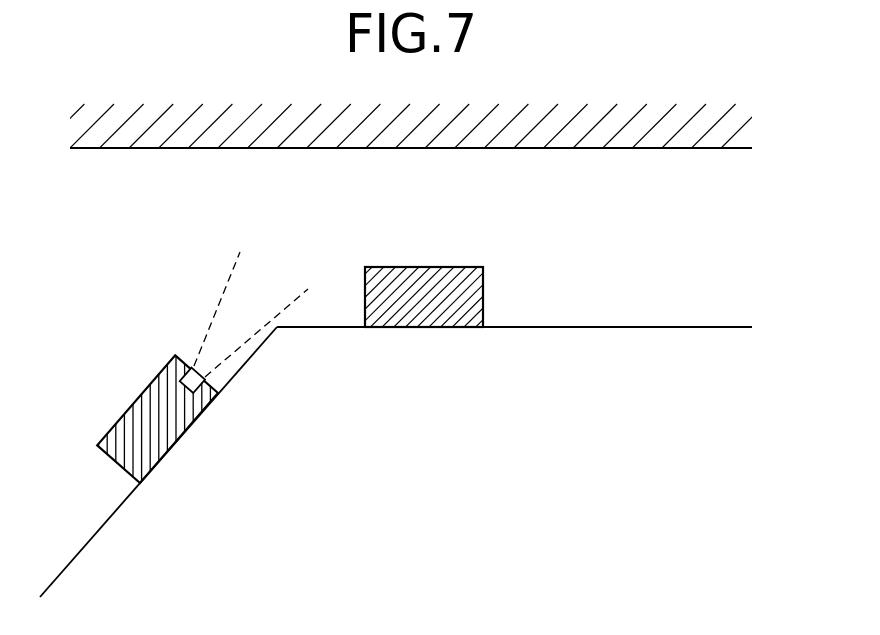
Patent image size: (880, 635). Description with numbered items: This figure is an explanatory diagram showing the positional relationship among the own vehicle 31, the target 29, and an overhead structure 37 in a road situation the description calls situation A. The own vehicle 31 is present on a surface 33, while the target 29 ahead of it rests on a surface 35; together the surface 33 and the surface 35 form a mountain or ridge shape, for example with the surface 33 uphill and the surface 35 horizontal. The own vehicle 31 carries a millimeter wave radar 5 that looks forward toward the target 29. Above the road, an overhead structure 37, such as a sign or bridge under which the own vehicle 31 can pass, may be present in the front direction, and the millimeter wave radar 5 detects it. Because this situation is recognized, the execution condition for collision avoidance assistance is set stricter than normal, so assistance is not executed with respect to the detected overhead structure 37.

The millimeter wave radar 5 is at (174, 356).
The target 29 is at (440, 267).
The own vehicle 31 is at (117, 417).
The surface 33 is at (78, 552).
The surface 35 is at (602, 327).
The overhead structure 37 is at (121, 148).